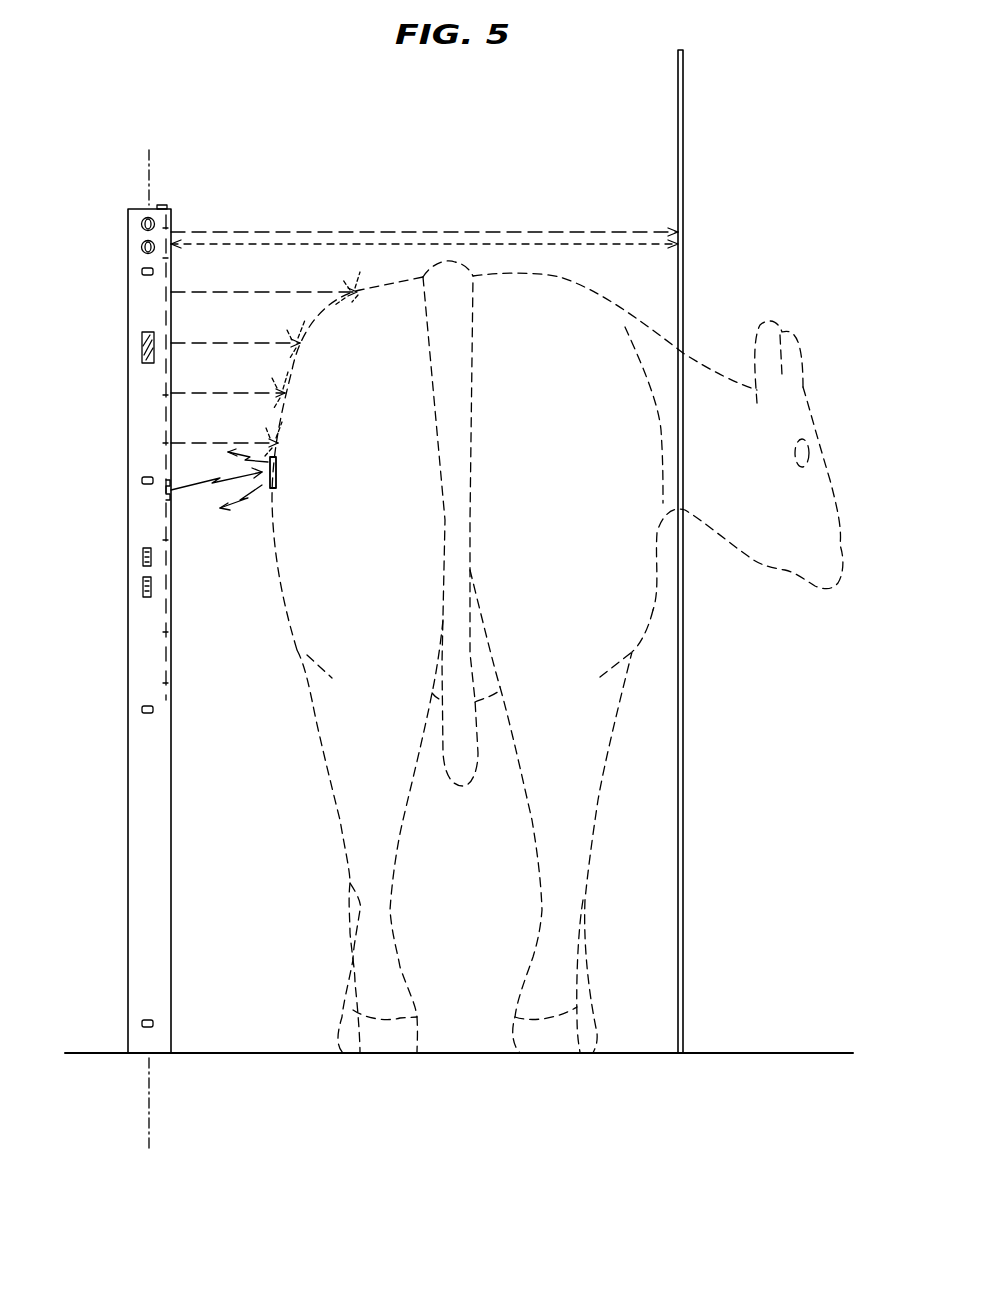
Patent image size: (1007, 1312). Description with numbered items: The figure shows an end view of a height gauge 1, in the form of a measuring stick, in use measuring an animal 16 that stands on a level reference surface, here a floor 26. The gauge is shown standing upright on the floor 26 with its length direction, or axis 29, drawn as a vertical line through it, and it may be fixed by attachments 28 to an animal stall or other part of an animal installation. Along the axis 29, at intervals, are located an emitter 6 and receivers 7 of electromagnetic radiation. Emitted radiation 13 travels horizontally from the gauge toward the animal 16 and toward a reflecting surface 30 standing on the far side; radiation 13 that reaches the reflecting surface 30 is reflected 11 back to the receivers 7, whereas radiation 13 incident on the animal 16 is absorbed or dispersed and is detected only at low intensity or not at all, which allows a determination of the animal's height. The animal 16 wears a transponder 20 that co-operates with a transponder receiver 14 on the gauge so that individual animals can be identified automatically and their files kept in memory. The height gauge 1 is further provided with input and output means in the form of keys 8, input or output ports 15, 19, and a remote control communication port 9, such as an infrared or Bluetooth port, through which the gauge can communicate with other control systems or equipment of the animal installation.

The height gauge 1 is at (116, 843).
The emitter 6 is at (158, 435).
The receivers 7 is at (171, 235).
The keys 8 is at (141, 247).
The remote control communication port 9 is at (141, 347).
The reflected radiation 11 is at (307, 244).
The emitted radiation 13 is at (385, 232).
The transponder receiver 14 is at (170, 497).
The input or output port 15 is at (143, 585).
The animal 16 is at (333, 747).
The input or output port 19 is at (143, 557).
The transponder 20 is at (268, 492).
The floor 26 is at (770, 1053).
The attachments 28 is at (141, 272).
The axis 29 is at (147, 150).
The reflecting surface 30 is at (683, 127).